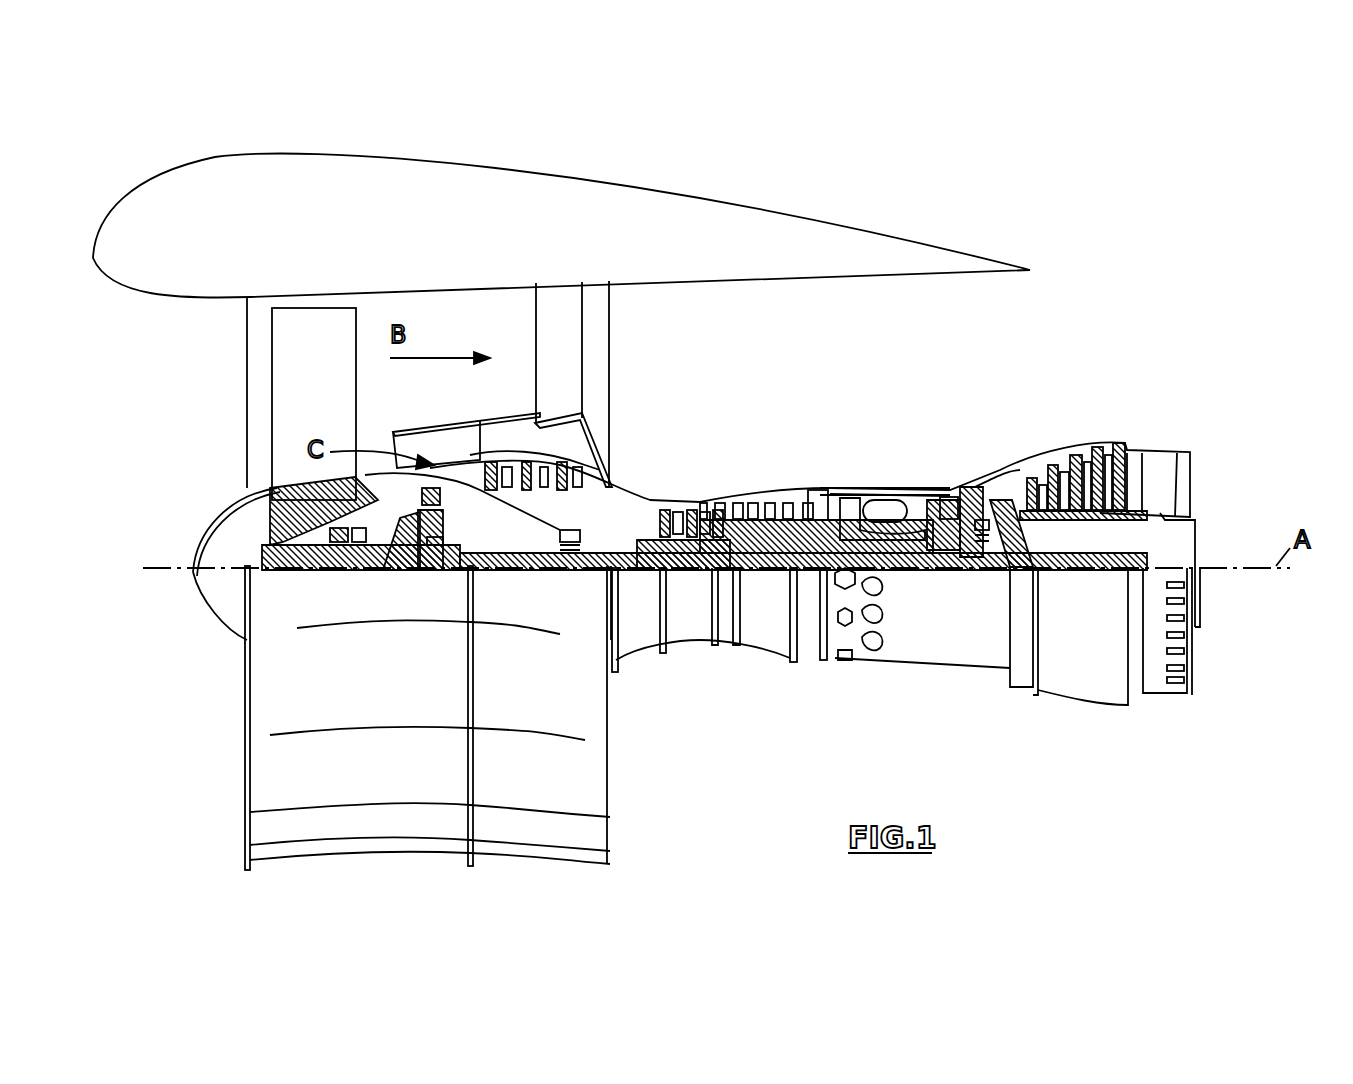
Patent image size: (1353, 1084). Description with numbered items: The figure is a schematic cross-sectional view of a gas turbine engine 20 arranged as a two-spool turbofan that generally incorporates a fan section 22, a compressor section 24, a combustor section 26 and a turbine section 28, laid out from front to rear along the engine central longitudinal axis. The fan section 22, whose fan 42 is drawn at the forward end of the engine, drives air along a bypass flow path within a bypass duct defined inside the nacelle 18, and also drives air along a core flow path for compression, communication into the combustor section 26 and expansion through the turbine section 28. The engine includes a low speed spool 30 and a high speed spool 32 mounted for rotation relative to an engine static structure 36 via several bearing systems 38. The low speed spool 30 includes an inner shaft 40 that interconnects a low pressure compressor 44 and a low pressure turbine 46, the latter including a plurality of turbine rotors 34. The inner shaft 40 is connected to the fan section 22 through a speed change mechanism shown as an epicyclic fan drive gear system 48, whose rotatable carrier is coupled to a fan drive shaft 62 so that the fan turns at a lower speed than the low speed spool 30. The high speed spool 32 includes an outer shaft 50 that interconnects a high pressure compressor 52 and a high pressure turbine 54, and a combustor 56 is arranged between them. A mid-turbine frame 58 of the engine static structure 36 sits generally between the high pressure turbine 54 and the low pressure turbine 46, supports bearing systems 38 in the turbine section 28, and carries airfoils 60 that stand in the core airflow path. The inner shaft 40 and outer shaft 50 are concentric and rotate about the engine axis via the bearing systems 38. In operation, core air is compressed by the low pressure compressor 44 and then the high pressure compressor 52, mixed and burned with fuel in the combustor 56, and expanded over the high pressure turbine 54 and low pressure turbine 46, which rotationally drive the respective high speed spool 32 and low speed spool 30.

The nacelle 18 is at (568, 195).
The gas turbine engine 20 is at (1083, 204).
The fan section 22 is at (452, 258).
The compressor section 24 is at (858, 406).
The combustor section 26 is at (922, 406).
The turbine section 28 is at (1145, 406).
The low speed spool 30 is at (766, 582).
The high speed spool 32 is at (810, 517).
The turbine rotors 34 is at (1087, 570).
The engine static structure 36 is at (808, 668).
The bearing systems 38 is at (358, 566).
The inner shaft 40 is at (628, 568).
The fan 42 is at (330, 413).
The low pressure compressor 44 is at (543, 470).
The low pressure turbine 46 is at (1073, 463).
The fan drive gear system 48 is at (440, 568).
The outer shaft 50 is at (893, 570).
The high pressure compressor 52 is at (733, 500).
The high pressure turbine 54 is at (960, 497).
The combustor 56 is at (882, 510).
The mid-turbine frame 58 is at (992, 476).
The airfoils 60 is at (1025, 570).
The fan drive shaft 62 is at (583, 534).